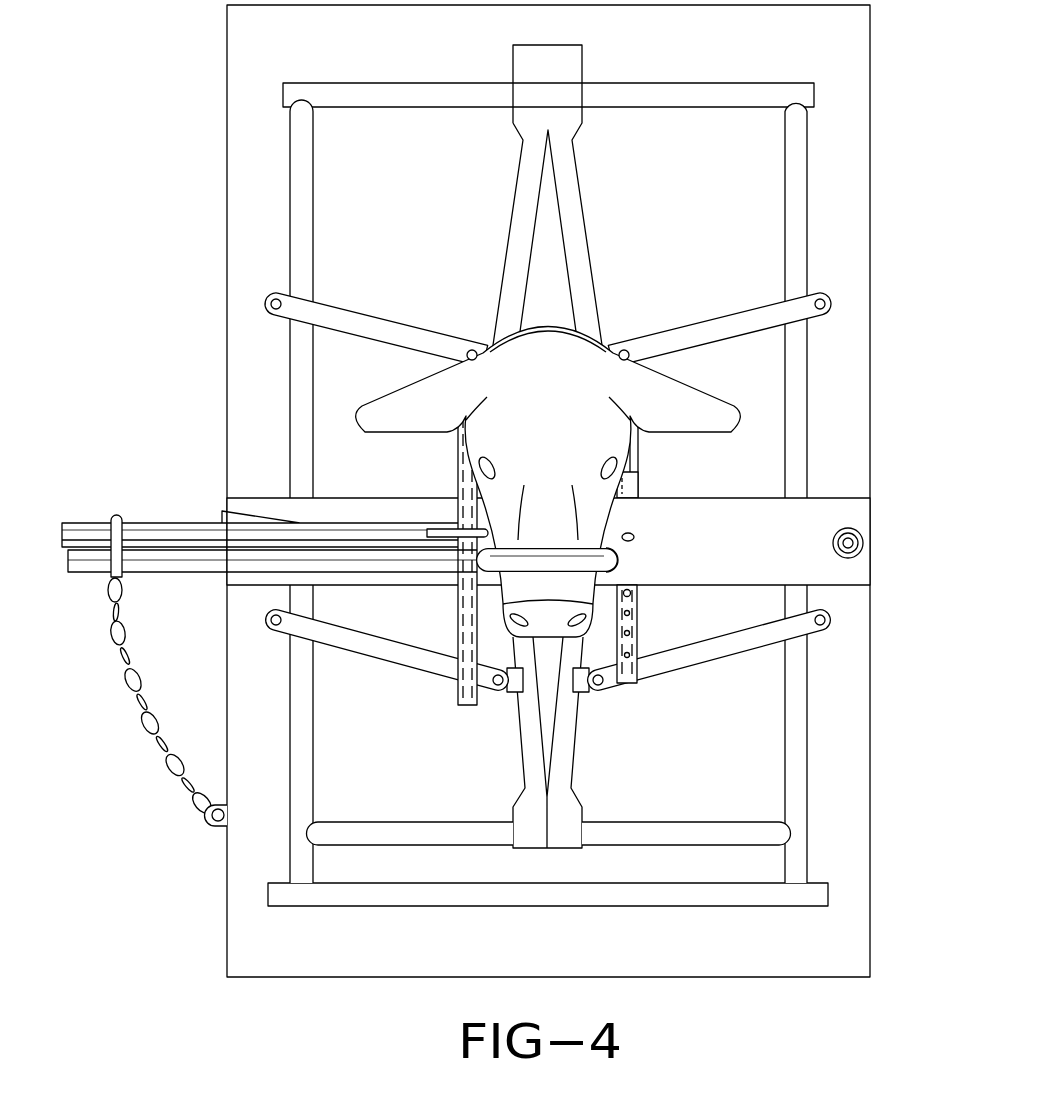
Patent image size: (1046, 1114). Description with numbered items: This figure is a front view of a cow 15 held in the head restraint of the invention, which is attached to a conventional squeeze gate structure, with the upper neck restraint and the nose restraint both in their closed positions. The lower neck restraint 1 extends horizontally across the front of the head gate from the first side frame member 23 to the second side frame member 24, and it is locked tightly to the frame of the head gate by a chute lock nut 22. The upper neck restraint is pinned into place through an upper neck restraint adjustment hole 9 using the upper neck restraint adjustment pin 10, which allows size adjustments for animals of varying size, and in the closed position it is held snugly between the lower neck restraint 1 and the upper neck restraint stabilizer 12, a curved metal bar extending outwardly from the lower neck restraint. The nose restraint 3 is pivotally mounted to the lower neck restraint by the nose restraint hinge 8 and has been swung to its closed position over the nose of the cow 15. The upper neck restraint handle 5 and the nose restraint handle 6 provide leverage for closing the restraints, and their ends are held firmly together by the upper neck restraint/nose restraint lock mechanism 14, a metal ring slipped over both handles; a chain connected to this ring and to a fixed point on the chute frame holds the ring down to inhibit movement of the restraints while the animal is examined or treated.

The lower neck restraint 1 is at (790, 543).
The nose restraint 3 is at (533, 558).
The upper neck restraint handle 5 is at (230, 540).
The nose restraint handle 6 is at (208, 553).
The nose restraint hinge 8 is at (625, 552).
The upper neck restraint adjustment hole 9 is at (630, 613).
The upper neck restraint adjustment pin 10 is at (632, 530).
The upper neck restraint stabilizer 12 is at (450, 532).
The upper neck restraint/nose restraint lock mechanism 14 is at (112, 537).
The cow 15 is at (587, 420).
The chute lock nut 22 is at (860, 550).
The first side frame member 23 is at (246, 381).
The second side frame member 24 is at (842, 381).